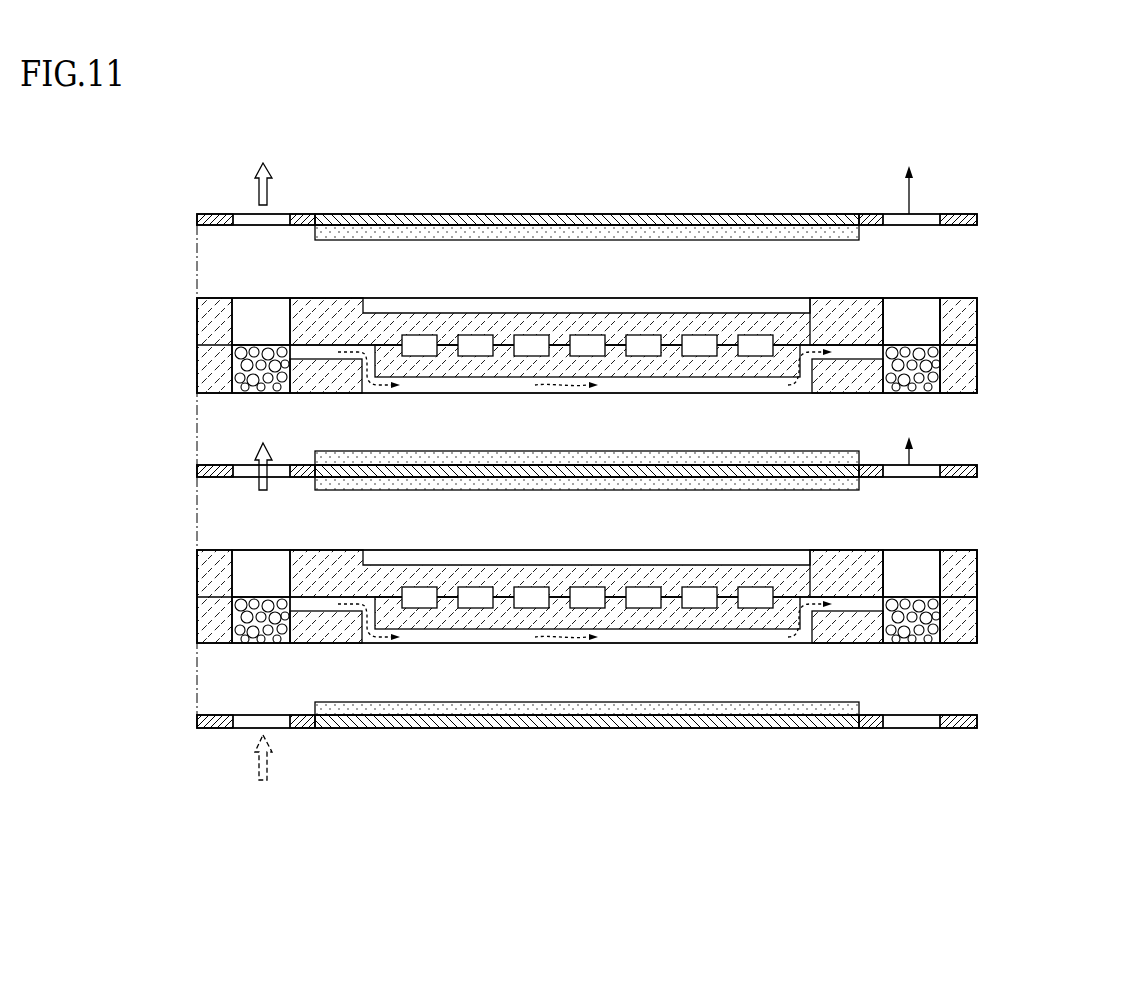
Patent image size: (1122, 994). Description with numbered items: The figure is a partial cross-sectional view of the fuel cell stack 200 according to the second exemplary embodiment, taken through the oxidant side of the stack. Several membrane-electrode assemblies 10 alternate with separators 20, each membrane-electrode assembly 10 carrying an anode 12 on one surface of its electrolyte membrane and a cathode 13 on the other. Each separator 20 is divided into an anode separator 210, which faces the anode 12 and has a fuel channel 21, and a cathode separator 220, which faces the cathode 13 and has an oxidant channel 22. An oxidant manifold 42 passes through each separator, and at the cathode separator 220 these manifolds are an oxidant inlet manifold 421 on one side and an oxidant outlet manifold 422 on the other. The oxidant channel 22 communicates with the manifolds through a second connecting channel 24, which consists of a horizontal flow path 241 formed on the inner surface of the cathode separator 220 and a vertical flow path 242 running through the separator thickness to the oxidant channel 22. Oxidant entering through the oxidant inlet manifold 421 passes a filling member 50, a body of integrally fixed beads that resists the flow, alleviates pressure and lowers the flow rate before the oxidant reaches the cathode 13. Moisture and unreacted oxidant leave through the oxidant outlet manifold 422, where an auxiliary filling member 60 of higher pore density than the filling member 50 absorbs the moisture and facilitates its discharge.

The fuel cell stack 200 is at (601, 100).
The membrane-electrode assembly 10 is at (186, 218).
The anode 12 is at (533, 232).
The cathode 13 is at (428, 458).
The separator 20 is at (1046, 300).
The anode separator 210 is at (965, 313).
The cathode separator 220 is at (965, 365).
The fuel channel 21 is at (595, 298).
The oxidant channel 22 is at (520, 385).
The second connecting channel 24 is at (885, 776).
The horizontal flow path 241 is at (860, 605).
The vertical flow path 242 is at (812, 625).
The oxidant manifold 42 is at (247, 313).
The oxidant inlet manifold 421 is at (244, 363).
The oxidant outlet manifold 422 is at (928, 387).
The filling member 50 is at (233, 378).
The auxiliary filling member 60 is at (905, 334).